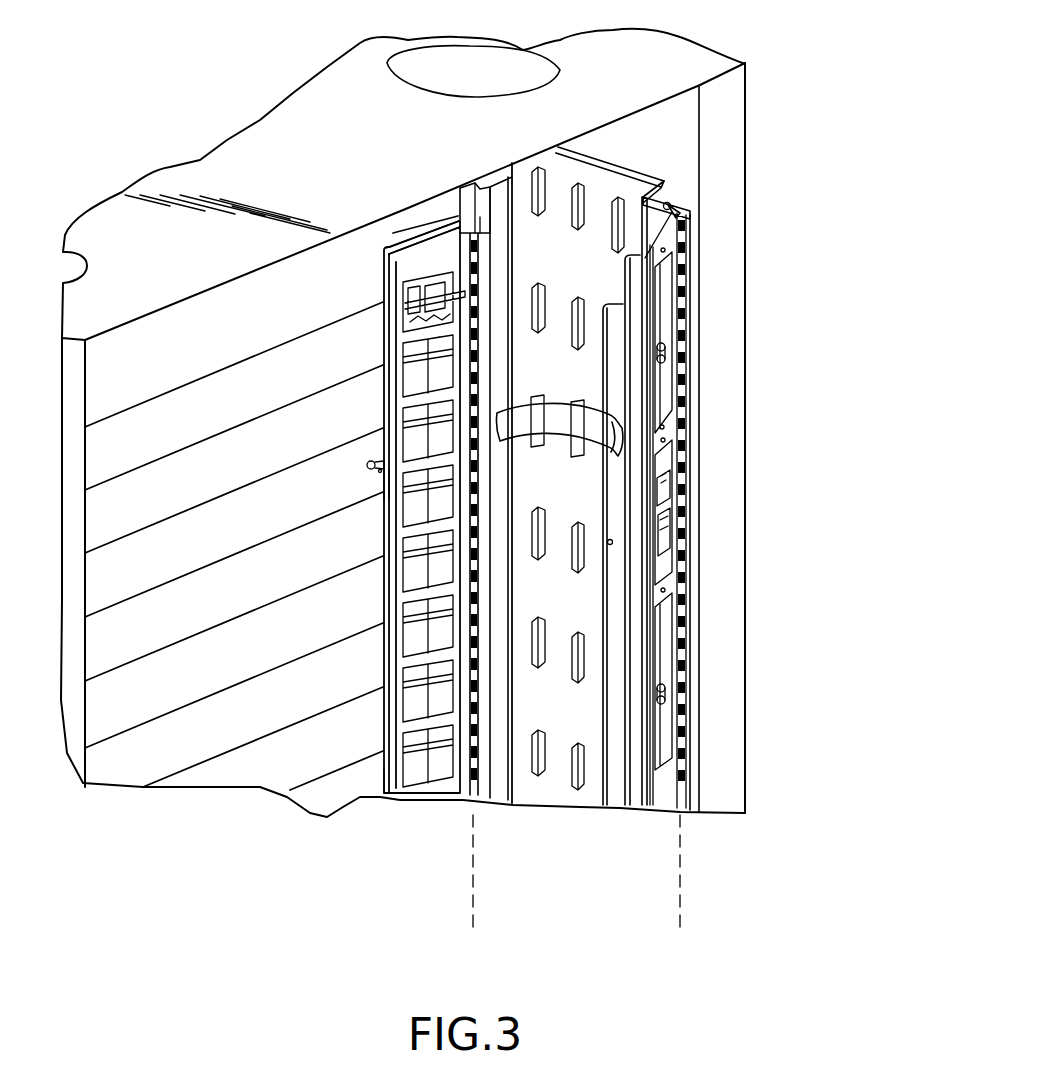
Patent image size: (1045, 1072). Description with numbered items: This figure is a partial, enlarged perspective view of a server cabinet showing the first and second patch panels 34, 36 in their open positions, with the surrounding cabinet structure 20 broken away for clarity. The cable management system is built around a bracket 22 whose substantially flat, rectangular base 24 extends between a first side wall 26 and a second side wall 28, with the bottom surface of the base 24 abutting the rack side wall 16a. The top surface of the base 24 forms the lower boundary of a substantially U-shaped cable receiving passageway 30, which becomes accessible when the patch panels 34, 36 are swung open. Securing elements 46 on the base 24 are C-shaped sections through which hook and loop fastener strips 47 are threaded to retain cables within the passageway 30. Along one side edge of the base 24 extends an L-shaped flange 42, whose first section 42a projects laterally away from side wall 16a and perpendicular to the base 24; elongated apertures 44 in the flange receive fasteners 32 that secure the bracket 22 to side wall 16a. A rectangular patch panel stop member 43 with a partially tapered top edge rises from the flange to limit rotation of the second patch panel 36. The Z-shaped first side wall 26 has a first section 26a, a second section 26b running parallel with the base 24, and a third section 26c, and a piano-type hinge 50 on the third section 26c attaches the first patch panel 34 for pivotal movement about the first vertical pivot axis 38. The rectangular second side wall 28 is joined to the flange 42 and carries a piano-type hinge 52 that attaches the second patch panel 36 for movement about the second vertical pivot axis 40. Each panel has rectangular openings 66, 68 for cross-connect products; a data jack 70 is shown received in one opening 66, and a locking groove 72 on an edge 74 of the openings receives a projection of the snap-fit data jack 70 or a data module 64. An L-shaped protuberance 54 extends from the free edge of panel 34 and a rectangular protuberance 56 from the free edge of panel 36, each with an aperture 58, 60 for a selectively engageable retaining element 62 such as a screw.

The cabinet enclosure 20 is at (535, 84).
The side wall 16a is at (746, 92).
The bracket 22 is at (483, 431).
The base 24 is at (632, 185).
The first side wall 26 is at (457, 237).
The first section 26a is at (488, 178).
The second section 26b is at (490, 190).
The third section 26c is at (480, 214).
The second side wall 28 is at (688, 263).
The cable receiving passageway 30 is at (596, 386).
The fasteners 32 is at (665, 350).
The first patch panel 34 is at (417, 250).
The second patch panel 36 is at (628, 728).
The first vertical pivot axis 38 is at (472, 853).
The second vertical pivot axis 40 is at (681, 853).
The flange 42 is at (691, 202).
The first section of the flange 42a is at (660, 193).
The patch panel stop member 43 is at (688, 228).
The elongated apertures 44 is at (667, 363).
The securing elements 46 is at (523, 534).
The hook and loop fastener strips 47 is at (626, 428).
The piano-type hinge 50 is at (405, 690).
The piano-type hinge 52 is at (683, 643).
The L-shaped protuberance 54 is at (372, 486).
The rectangular protuberance 56 is at (667, 510).
The aperture 58 is at (382, 483).
The aperture 60 is at (613, 542).
The retaining element 62 is at (367, 463).
The data module 64 is at (667, 490).
The openings 66 is at (415, 647).
The openings 68 is at (668, 672).
The data jack 70 is at (403, 297).
The locking groove 72 is at (410, 750).
The edge 74 is at (385, 772).